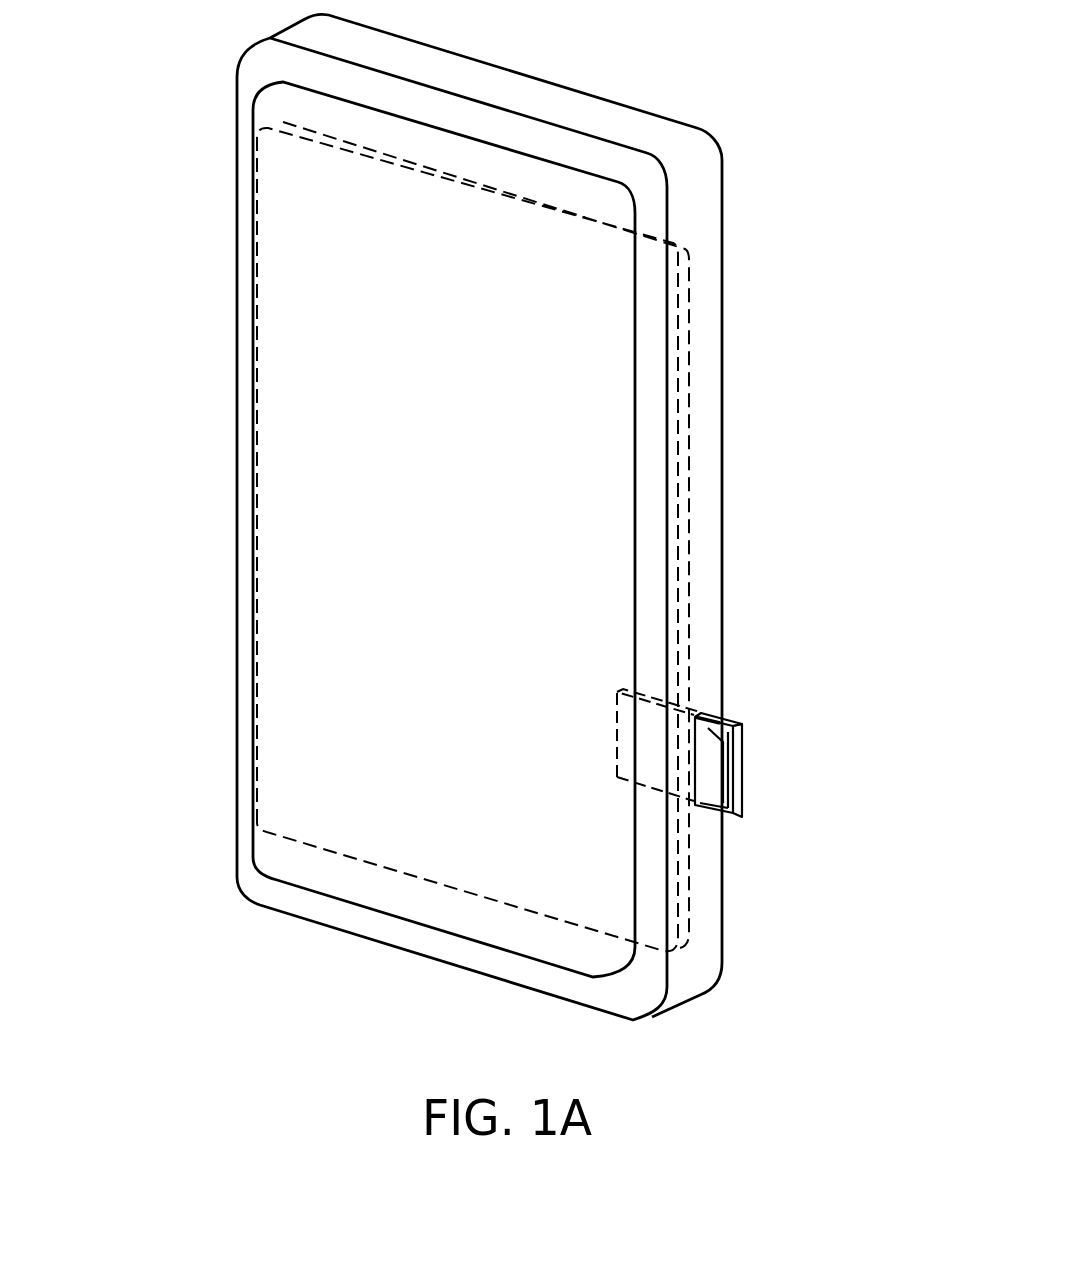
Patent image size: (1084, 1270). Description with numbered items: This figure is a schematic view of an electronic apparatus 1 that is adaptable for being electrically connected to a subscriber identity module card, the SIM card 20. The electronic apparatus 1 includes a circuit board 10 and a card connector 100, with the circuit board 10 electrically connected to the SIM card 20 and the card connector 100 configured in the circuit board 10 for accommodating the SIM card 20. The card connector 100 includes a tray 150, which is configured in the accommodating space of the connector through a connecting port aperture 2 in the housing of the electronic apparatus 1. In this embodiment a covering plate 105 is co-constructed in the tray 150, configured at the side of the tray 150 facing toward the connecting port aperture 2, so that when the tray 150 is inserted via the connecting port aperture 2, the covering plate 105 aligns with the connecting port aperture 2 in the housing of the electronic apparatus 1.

The electronic apparatus 1 is at (771, 53).
The circuit board 10 is at (300, 383).
The connecting port aperture 2 is at (781, 721).
The SIM card 20 is at (715, 785).
The card connector 100 is at (643, 785).
The covering plate 105 is at (739, 748).
The tray 150 is at (723, 721).